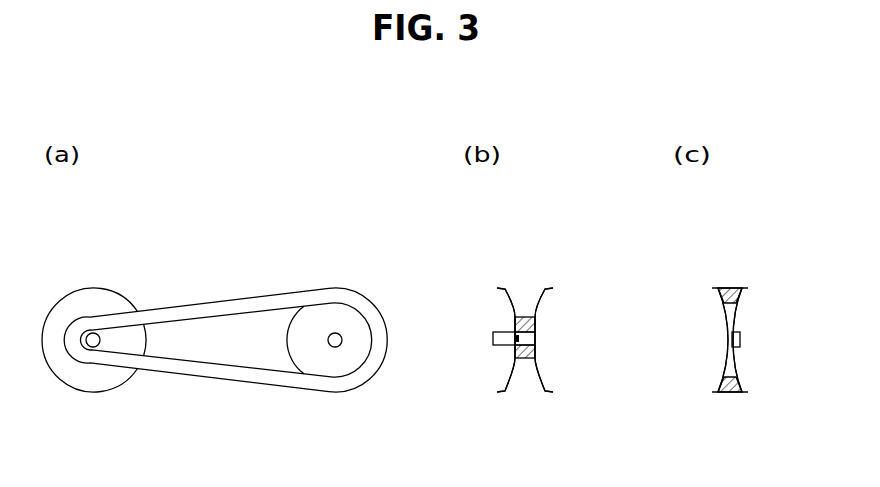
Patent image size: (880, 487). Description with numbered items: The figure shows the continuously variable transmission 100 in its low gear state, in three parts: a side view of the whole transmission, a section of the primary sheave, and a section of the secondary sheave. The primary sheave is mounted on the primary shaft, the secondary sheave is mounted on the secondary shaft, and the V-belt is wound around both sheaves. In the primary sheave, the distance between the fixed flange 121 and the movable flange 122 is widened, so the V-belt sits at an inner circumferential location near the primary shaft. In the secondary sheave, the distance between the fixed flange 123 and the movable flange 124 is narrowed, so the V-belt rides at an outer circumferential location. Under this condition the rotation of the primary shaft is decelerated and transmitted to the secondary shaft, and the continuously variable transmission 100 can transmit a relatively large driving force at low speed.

The continuously variable transmission 100 is at (208, 220).
The fixed flange 121 is at (502, 288).
The movable flange 122 is at (543, 288).
The fixed flange 123 is at (740, 288).
The movable flange 124 is at (722, 288).